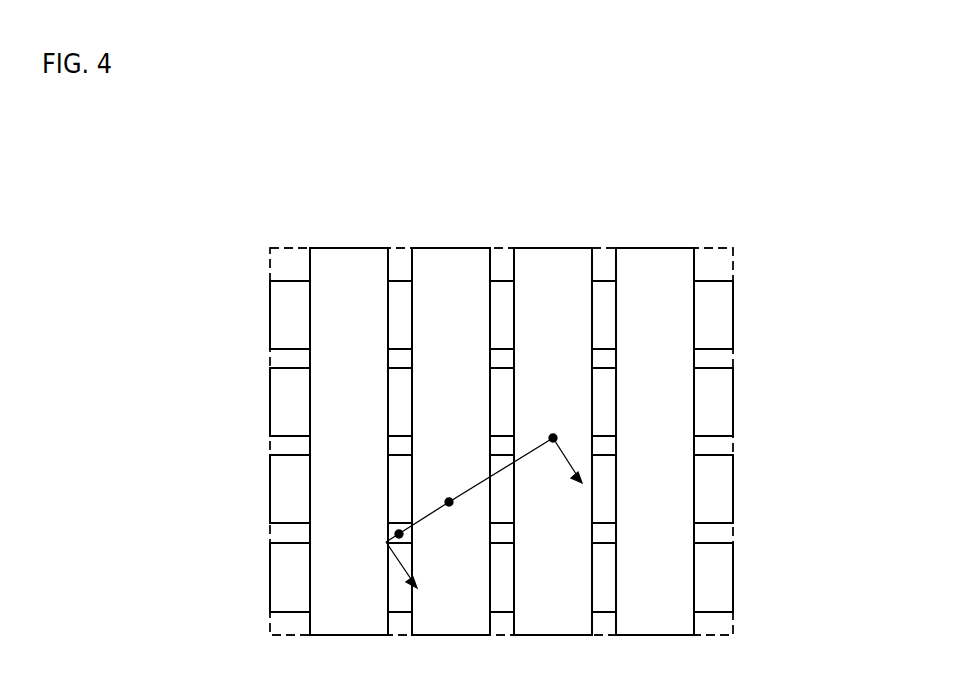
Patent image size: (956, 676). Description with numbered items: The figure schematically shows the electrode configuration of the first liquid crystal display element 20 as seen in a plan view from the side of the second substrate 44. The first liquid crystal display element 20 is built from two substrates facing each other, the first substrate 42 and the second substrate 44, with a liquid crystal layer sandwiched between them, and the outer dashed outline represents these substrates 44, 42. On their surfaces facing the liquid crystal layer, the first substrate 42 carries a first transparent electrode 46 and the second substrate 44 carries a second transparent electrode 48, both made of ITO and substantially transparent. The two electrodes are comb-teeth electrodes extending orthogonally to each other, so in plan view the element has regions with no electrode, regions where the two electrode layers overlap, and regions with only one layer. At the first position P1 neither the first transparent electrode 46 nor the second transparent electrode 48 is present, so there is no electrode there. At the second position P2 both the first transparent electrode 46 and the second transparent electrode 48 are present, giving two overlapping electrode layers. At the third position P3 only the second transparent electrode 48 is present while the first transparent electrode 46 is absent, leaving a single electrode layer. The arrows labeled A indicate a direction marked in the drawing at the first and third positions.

The first liquid crystal display element 20 is at (258, 228).
The second substrate 44 is at (730, 271).
The first substrate 42 is at (501, 441).
The first transparent electrode 46 is at (725, 403).
The second transparent electrode 48 is at (682, 358).
The first position P1 is at (398, 534).
The second position P2 is at (449, 502).
The third position P3 is at (553, 438).
The direction A is at (493, 523).